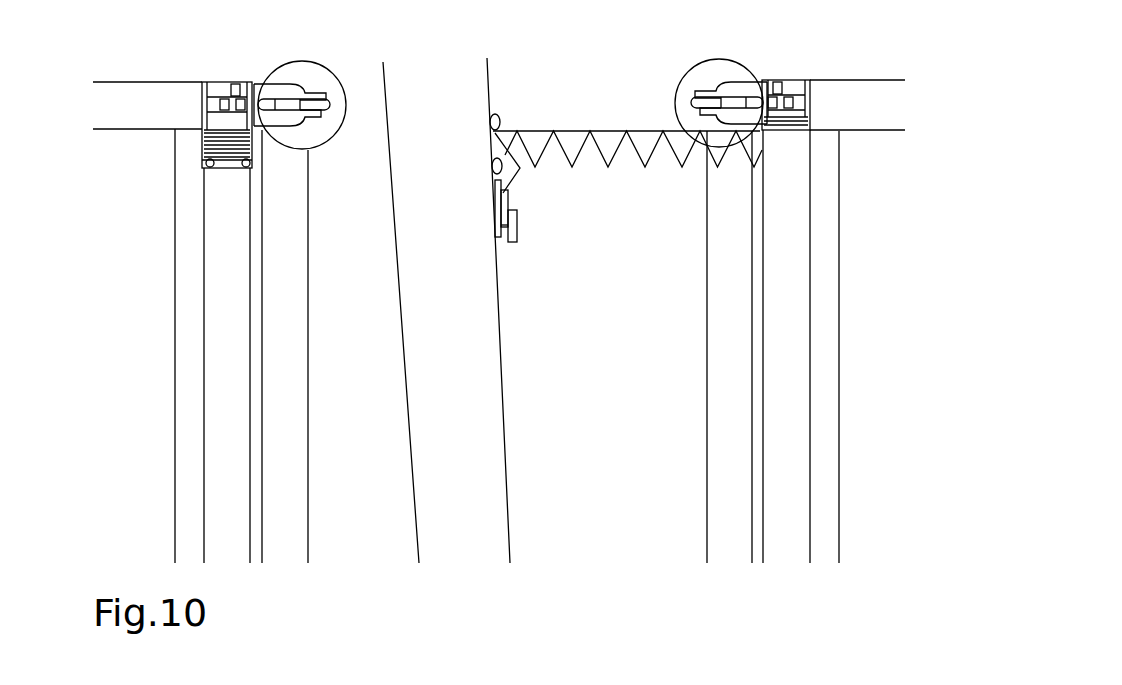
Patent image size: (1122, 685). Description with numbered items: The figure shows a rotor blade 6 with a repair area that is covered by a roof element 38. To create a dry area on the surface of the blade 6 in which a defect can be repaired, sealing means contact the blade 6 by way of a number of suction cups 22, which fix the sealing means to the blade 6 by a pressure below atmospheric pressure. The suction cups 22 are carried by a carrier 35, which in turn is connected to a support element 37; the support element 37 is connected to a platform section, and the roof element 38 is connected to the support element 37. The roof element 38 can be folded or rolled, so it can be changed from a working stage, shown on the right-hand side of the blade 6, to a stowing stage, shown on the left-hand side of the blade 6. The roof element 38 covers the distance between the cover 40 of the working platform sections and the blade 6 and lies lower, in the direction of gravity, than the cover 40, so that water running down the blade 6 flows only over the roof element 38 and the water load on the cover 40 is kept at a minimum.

The blade 6 is at (492, 410).
The suction cups 22 is at (517, 220).
The carrier 35 is at (515, 182).
The support element 37 is at (567, 131).
The roof element 38 is at (190, 148).
The cover 40 is at (862, 78).